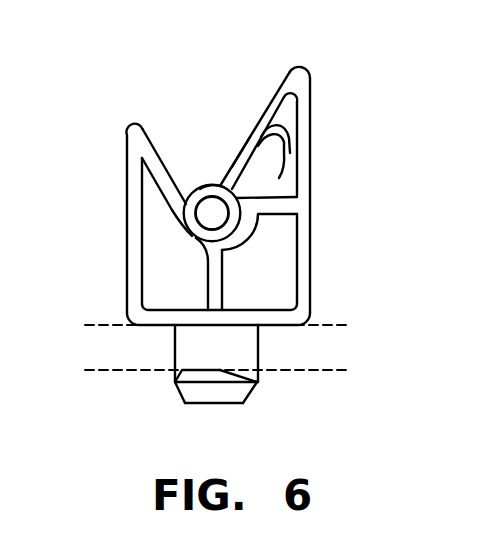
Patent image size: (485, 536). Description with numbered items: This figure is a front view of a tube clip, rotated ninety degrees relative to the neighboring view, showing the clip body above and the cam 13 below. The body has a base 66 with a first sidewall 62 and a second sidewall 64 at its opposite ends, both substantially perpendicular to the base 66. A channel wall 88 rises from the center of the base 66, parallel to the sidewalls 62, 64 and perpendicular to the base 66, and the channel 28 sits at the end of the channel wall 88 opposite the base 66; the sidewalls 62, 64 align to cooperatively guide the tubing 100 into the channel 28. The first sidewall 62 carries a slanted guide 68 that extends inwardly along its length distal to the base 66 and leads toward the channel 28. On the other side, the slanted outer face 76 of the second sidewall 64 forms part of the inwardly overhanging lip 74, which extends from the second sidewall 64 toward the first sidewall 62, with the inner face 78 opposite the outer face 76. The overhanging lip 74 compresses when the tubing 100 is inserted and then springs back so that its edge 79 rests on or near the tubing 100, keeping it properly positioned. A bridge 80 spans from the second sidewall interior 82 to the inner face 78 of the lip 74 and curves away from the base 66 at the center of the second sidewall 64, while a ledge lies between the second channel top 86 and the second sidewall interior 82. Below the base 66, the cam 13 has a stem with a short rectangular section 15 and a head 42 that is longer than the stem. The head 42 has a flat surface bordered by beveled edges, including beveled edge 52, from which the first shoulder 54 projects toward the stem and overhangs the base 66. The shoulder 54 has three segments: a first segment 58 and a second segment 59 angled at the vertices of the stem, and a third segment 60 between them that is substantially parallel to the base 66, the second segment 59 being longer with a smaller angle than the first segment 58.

The cam 13 is at (248, 337).
The short rectangular section of stem 15 is at (185, 343).
The channel 28 is at (192, 237).
The head 42 is at (235, 396).
The beveled edge 52 is at (212, 397).
The first shoulder 54 is at (178, 385).
The first segment 58 is at (176, 374).
The second segment 59 is at (242, 373).
The third segment 60 is at (200, 368).
The first sidewall 62 is at (126, 188).
The second sidewall 64 is at (303, 170).
The base 66 is at (277, 323).
The slanted guide 68 is at (160, 168).
The overhanging lip 74 is at (222, 183).
The slanted outer face 76 is at (232, 167).
The inner face 78 is at (265, 113).
The edge 79 is at (207, 185).
The bridge 80 is at (283, 175).
The second sidewall interior 82 is at (298, 119).
The second channel top 86 is at (310, 243).
The channel wall 88 is at (208, 293).
The tubing 100 is at (184, 211).